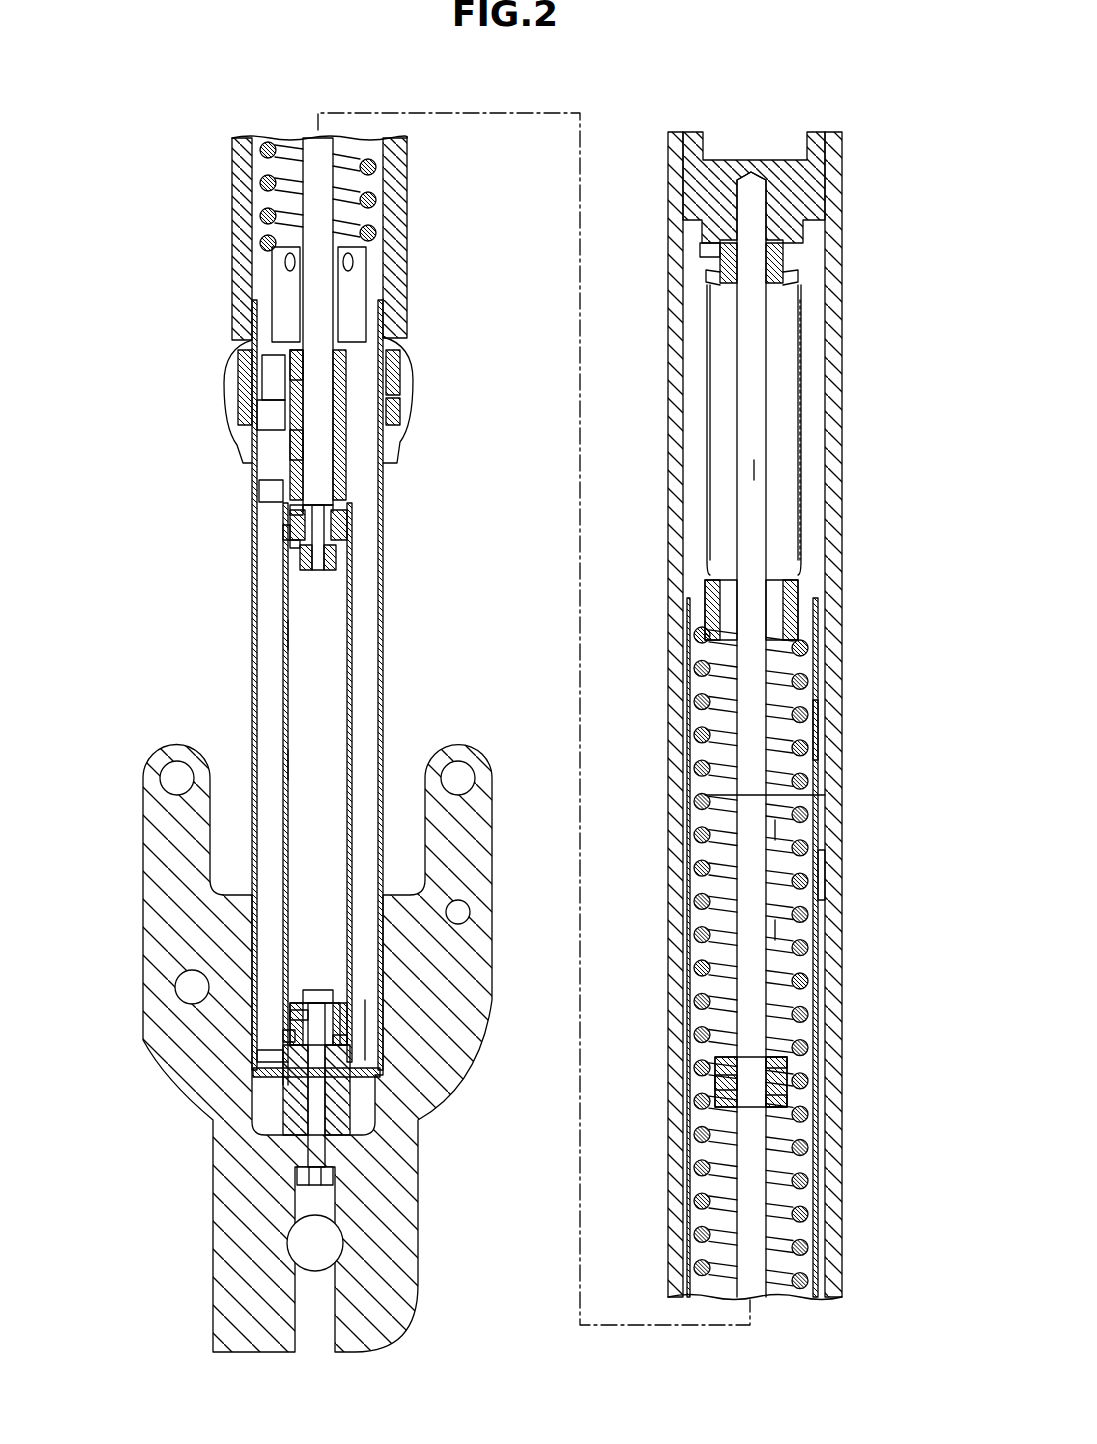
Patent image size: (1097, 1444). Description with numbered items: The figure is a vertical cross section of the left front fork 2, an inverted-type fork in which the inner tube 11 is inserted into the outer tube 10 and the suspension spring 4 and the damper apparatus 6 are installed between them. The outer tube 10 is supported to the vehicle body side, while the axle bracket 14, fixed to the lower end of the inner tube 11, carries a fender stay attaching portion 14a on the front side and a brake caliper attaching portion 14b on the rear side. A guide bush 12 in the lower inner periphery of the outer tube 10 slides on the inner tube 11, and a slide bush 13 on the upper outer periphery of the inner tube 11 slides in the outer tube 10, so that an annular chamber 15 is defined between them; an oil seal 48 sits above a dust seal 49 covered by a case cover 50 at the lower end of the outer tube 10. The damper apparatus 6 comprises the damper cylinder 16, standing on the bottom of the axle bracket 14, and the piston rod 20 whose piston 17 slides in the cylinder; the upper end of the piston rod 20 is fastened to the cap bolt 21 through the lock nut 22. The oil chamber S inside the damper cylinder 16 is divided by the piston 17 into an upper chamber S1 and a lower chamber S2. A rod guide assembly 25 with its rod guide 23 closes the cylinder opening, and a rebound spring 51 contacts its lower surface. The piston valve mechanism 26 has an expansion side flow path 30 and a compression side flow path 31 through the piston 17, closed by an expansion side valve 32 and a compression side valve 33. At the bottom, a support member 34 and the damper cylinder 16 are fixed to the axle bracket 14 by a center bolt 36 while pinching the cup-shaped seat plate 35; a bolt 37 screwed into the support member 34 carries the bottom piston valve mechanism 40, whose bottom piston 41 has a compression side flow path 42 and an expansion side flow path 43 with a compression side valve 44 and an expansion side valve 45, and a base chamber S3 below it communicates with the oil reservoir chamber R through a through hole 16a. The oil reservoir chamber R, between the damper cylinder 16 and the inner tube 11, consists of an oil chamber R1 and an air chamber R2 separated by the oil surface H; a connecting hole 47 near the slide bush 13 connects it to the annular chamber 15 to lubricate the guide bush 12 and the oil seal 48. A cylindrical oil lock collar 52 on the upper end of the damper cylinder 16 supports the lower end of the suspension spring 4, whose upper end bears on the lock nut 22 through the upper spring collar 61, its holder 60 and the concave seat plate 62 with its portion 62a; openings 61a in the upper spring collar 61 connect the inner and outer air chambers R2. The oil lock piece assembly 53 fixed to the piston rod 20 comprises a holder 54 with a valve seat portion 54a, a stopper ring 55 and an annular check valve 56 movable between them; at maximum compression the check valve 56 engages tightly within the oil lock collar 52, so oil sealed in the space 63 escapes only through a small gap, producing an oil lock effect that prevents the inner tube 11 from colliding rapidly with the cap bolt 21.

The left front fork 2 is at (536, 92).
The piston rod 20 is at (330, 178).
The space 63 is at (347, 287).
The guide bush 12 is at (400, 308).
The oil seal 48 is at (398, 360).
The dust seal 49 is at (400, 437).
The case cover 50 is at (400, 455).
The piston valve mechanism 26 is at (358, 501).
The expansion side flow path 30 is at (338, 527).
The expansion side valve 32 is at (335, 548).
The inner tube 11 is at (383, 610).
The damper cylinder 16 is at (352, 660).
The fender stay attaching portion 14a is at (458, 760).
The oil lock collar 52 is at (277, 290).
The rod guide assembly 25 is at (292, 365).
The rod guide 23 is at (285, 378).
The damper apparatus 6 is at (277, 421).
The rebound spring 51 is at (290, 447).
The upper chamber S1 is at (285, 497).
The compression side valve 33 is at (292, 514).
The piston 17 is at (290, 533).
The compression side flow path 31 is at (290, 547).
The oil chamber S is at (300, 635).
The lower chamber S2 is at (295, 767).
The brake caliper attaching portion 14b is at (175, 815).
The bottom piston valve mechanism 40 is at (334, 995).
The bolt 37 is at (300, 1020).
The compression side flow path 42 is at (290, 1040).
The compression side valve 44 is at (275, 1060).
The through hole 16a is at (283, 1090).
The expansion side valve 45 is at (330, 1013).
The bottom piston 41 is at (340, 1025).
The expansion side flow path 43 is at (345, 1042).
The base chamber S3 is at (340, 1065).
The support member 34 is at (340, 1100).
The seat plate 35 is at (350, 1135).
The center bolt 36 is at (320, 1155).
The axle bracket 14 is at (400, 1235).
The cap bolt 21 is at (815, 175).
The lock nut 22 is at (712, 258).
The concave seat plate 62 is at (805, 275).
The seal lip 62a is at (780, 290).
The openings 61a is at (800, 330).
The outer tube 10 is at (830, 382).
The upper spring collar 61 is at (805, 420).
The air chamber R2 is at (790, 470).
The holder 60 is at (795, 587).
The slide bush 13 is at (820, 660).
The connecting hole 47 is at (810, 735).
The suspension spring 4 is at (810, 760).
The oil surface H is at (827, 795).
The oil reservoir chamber R is at (810, 832).
The annular chamber 15 is at (825, 875).
The oil chamber R1 is at (805, 930).
The oil lock piece assembly 53 is at (784, 1036).
The valve seat portion 54a is at (780, 1060).
The check valve 56 is at (720, 1082).
The holder 54 is at (800, 1080).
The stopper ring 55 is at (795, 1100).